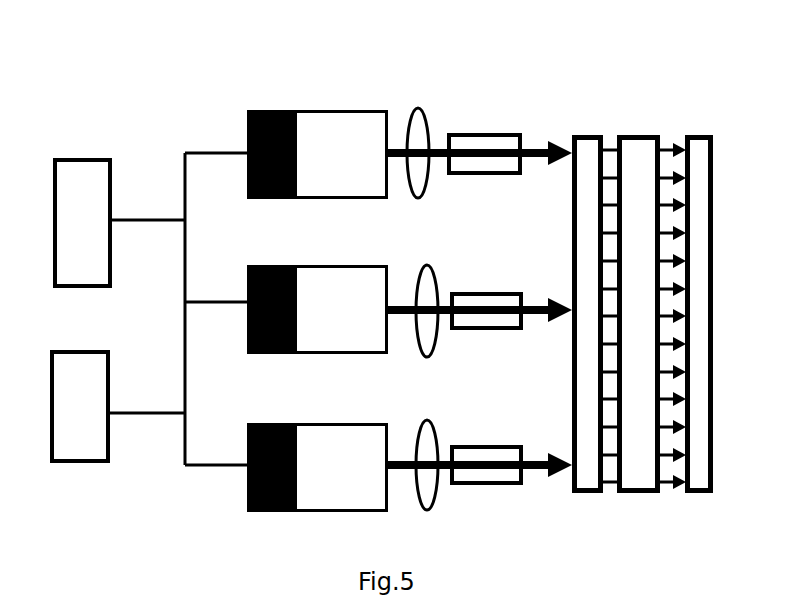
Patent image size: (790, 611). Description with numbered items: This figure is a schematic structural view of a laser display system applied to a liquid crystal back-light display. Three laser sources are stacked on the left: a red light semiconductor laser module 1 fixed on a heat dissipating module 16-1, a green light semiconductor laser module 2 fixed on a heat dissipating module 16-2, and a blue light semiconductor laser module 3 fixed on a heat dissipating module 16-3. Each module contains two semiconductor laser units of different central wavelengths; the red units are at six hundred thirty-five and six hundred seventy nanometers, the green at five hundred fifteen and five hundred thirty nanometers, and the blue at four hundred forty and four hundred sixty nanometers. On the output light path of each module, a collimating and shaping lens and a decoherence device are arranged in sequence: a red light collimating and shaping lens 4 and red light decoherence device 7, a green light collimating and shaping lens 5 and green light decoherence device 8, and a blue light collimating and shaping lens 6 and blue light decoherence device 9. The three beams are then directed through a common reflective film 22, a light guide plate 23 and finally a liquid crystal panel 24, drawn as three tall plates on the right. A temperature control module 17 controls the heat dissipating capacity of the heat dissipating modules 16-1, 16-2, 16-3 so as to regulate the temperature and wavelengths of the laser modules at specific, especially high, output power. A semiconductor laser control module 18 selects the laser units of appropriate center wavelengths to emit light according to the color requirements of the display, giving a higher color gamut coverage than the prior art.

The red light semiconductor laser module 1 is at (352, 110).
The green light semiconductor laser module 2 is at (352, 213).
The blue light semiconductor laser module 3 is at (362, 370).
The red light collimating and shaping lens 4 is at (418, 108).
The green light collimating and shaping lens 5 is at (427, 265).
The blue light collimating and shaping lens 6 is at (427, 420).
The red light decoherence device 7 is at (482, 133).
The green light decoherence device 8 is at (477, 292).
The blue light decoherence device 9 is at (485, 445).
The heat dissipating module 16-1 is at (257, 110).
The heat dissipating module 16-2 is at (272, 212).
The heat dissipating module 16-3 is at (272, 423).
The temperature control module 17 is at (80, 158).
The semiconductor laser control module 18 is at (85, 350).
The reflective film 22 is at (587, 135).
The light guide plate 23 is at (637, 135).
The liquid crystal panel 24 is at (697, 135).